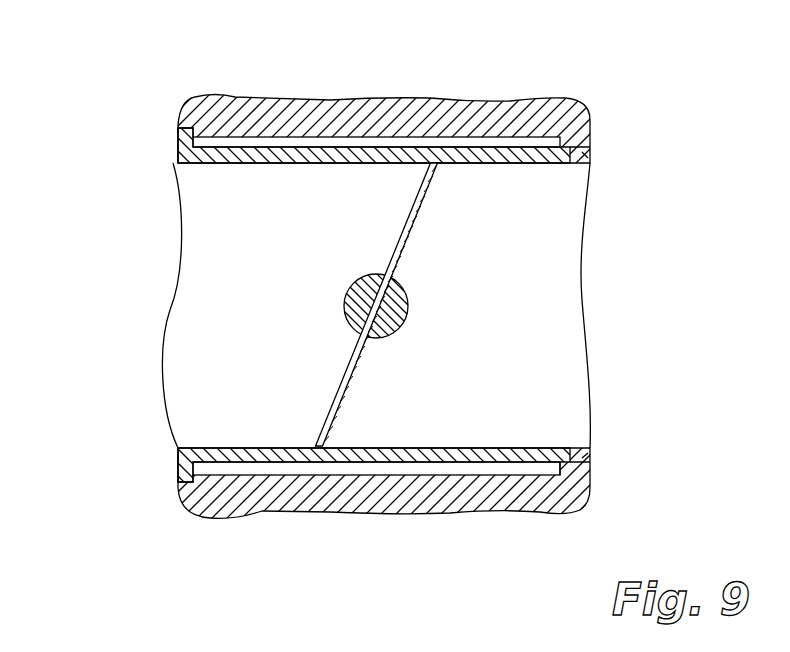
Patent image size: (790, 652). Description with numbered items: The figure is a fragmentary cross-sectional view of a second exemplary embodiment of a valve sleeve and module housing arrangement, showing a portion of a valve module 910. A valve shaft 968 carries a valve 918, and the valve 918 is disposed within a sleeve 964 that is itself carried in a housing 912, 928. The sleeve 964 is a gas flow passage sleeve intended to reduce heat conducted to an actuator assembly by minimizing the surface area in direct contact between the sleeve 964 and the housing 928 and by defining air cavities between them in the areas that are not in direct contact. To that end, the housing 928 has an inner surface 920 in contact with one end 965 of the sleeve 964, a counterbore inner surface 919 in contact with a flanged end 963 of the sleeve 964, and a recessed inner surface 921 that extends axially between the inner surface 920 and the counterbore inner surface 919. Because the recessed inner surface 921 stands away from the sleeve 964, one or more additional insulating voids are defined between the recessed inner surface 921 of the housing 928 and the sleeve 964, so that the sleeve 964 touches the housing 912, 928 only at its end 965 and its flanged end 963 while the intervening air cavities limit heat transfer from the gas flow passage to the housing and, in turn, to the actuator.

The valve module 910 is at (126, 93).
The housing 912 is at (386, 272).
The housing 928 is at (320, 94).
The valve 918 is at (423, 207).
The counterbore inner surface 919 is at (178, 131).
The inner surface 920 is at (567, 150).
The recessed inner surface 921 is at (461, 137).
The flanged end 963 is at (180, 150).
The sleeve 964 is at (522, 447).
The end 965 is at (585, 154).
The valve shaft 968 is at (405, 316).